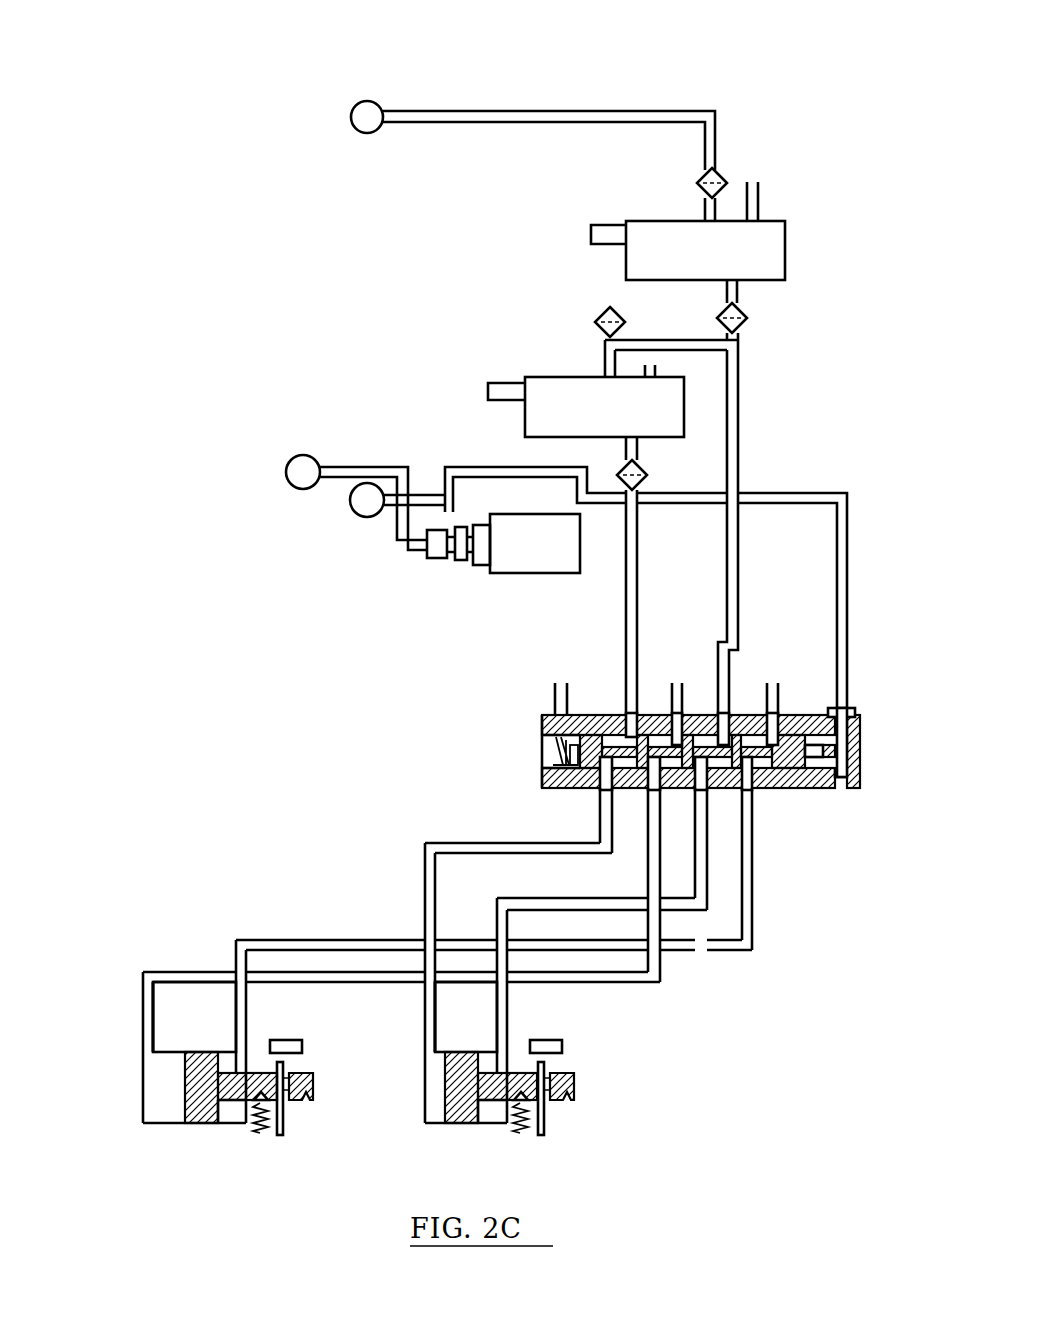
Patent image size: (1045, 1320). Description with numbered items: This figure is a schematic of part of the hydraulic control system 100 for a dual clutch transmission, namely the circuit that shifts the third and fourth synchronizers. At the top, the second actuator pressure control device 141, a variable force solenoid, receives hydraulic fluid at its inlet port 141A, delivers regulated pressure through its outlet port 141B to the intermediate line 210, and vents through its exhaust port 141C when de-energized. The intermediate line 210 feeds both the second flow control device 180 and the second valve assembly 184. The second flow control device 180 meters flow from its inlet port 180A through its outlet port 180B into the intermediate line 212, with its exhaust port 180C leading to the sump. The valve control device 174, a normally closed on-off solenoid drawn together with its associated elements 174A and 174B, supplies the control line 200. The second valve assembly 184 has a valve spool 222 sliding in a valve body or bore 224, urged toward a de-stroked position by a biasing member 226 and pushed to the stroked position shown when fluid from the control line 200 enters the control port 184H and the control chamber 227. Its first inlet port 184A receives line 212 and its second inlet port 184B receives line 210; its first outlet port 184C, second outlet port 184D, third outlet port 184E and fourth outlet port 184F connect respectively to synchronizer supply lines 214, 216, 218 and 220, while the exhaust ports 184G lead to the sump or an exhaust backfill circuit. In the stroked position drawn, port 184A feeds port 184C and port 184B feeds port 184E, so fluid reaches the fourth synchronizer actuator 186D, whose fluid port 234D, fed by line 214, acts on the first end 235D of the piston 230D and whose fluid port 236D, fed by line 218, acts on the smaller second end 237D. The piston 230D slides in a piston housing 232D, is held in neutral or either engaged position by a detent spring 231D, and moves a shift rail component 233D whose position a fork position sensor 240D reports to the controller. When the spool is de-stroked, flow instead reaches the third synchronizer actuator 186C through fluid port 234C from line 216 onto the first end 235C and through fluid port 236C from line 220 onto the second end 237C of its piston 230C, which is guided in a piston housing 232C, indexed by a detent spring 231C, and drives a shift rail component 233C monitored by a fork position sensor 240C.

The hydraulic system 100 is at (481, 619).
The second actuator pressure control device 141 is at (723, 243).
The inlet port 141A is at (663, 203).
The outlet port 141B is at (777, 292).
The exhaust port 141C is at (801, 204).
The second flow control device 180 is at (644, 403).
The inlet port 180A is at (564, 358).
The outlet port 180B is at (676, 452).
The exhaust port 180C is at (722, 365).
The valve control device 174 is at (502, 530).
The sensor fitting 174A is at (412, 569).
The sensor line 174B is at (535, 476).
The control line 200 is at (742, 601).
The intermediate line 210 is at (778, 524).
The intermediate line 212 is at (595, 602).
The synchronizer supply line 214 is at (481, 983).
The synchronizer supply line 216 is at (428, 1047).
The synchronizer supply line 218 is at (578, 999).
The synchronizer supply line 220 is at (492, 1004).
The valve spool 222 is at (663, 698).
The valve body or bore 224 is at (862, 699).
The biasing member 226 is at (525, 736).
The control chamber 227 is at (833, 790).
The second valve assembly 184 is at (661, 773).
The first inlet port 184A is at (592, 694).
The second inlet port 184B is at (765, 688).
The first outlet port 184C is at (571, 805).
The second outlet port 184D is at (616, 869).
The third outlet port 184E is at (755, 833).
The fourth outlet port 184F is at (776, 853).
The exhaust ports 184G is at (655, 654).
The control port 184H is at (802, 686).
The third synchronizer actuator 186C is at (201, 1103).
The piston 230C is at (141, 1083).
The detent spring 231C is at (249, 1157).
The piston housing or cylinder 232C is at (155, 1115).
The shift rail component 233C is at (307, 1122).
The fluid port 234C is at (109, 1017).
The first end 235C is at (171, 1087).
The fluid port 236C is at (196, 1017).
The second end 237C is at (194, 1132).
The fork position sensor 240C is at (295, 1022).
The fourth synchronizer actuator 186D is at (513, 1098).
The piston 230D is at (434, 1113).
The detent spring 231D is at (559, 1139).
The piston housing or cylinder 232D is at (428, 1115).
The shift rail component 233D is at (607, 1108).
The fluid port 234D is at (393, 1017).
The first end 235D is at (446, 1073).
The fluid port 236D is at (467, 1017).
The second end 237D is at (495, 1142).
The fork position sensor 240D is at (556, 1023).